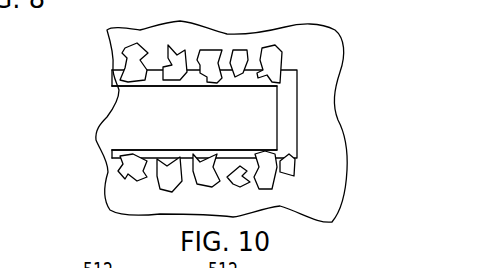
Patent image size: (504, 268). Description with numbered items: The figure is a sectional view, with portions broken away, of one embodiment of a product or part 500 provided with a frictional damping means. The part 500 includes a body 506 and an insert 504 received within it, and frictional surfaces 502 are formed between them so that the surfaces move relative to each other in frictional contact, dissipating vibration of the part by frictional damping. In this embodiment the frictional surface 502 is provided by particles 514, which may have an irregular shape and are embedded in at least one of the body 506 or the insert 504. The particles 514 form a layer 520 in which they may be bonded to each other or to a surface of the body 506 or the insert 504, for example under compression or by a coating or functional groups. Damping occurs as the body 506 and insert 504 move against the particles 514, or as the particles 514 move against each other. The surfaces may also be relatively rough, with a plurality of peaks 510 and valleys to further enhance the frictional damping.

The product or part 500 is at (60, 57).
The frictional surfaces 502 is at (263, 114).
The insert 504 is at (267, 128).
The body 506 is at (232, 34).
The peaks 510 is at (132, 100).
The particles 514 is at (182, 53).
The layer 520 is at (107, 76).